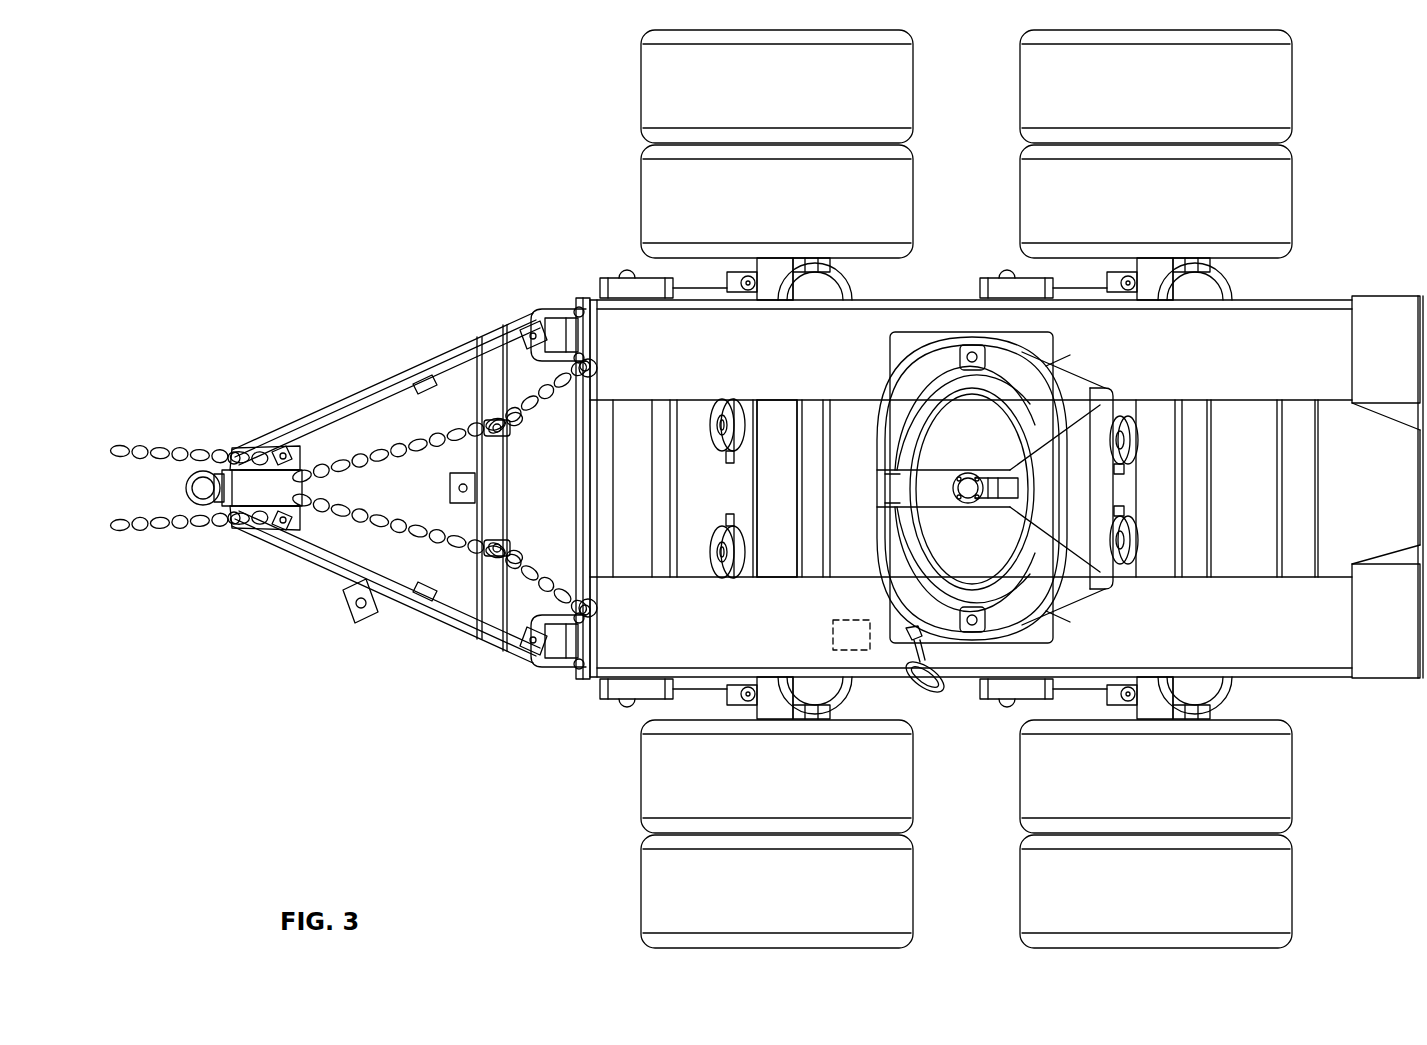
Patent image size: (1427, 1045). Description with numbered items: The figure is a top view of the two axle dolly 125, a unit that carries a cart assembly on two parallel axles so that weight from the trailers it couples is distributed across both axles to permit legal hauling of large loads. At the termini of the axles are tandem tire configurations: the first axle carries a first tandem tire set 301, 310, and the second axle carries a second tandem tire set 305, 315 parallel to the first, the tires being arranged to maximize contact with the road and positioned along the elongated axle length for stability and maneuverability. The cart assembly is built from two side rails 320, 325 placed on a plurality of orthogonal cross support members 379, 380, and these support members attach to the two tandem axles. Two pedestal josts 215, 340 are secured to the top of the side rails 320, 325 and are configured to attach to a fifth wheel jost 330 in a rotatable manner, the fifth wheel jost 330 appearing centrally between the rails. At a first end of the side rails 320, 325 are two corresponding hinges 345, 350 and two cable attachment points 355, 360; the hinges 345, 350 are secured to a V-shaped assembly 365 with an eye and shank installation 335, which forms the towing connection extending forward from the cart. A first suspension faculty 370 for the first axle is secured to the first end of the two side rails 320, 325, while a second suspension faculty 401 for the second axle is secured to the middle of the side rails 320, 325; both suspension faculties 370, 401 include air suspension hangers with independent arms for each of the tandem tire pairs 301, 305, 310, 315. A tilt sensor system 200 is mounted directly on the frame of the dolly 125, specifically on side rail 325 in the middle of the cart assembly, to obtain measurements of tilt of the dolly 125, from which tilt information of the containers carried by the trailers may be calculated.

The dolly 125 is at (454, 254).
The tilt sensor system 200 is at (840, 622).
The pedestal jost 215 is at (1045, 600).
The tire of first tandem tire set 301 is at (722, 158).
The tire of second tandem tire set 305 is at (1132, 158).
The tire of first tandem tire set 310 is at (726, 818).
The tire of second tandem tire set 315 is at (1205, 822).
The side rail 320 is at (1328, 318).
The side rail 325 is at (1330, 662).
The fifth wheel jost 330 is at (903, 392).
The eye and shank installation 335 is at (200, 472).
The pedestal jost 340 is at (903, 345).
The hinge 345 is at (553, 320).
The hinge 350 is at (556, 670).
The cable attachment point 355 is at (575, 400).
The cable attachment point 360 is at (600, 614).
The V-shaped assembly 365 is at (305, 410).
The first suspension faculty 370 is at (663, 468).
The cross support member 379 is at (774, 413).
The cross support member 380 is at (1160, 560).
The second suspension faculty 401 is at (1045, 462).